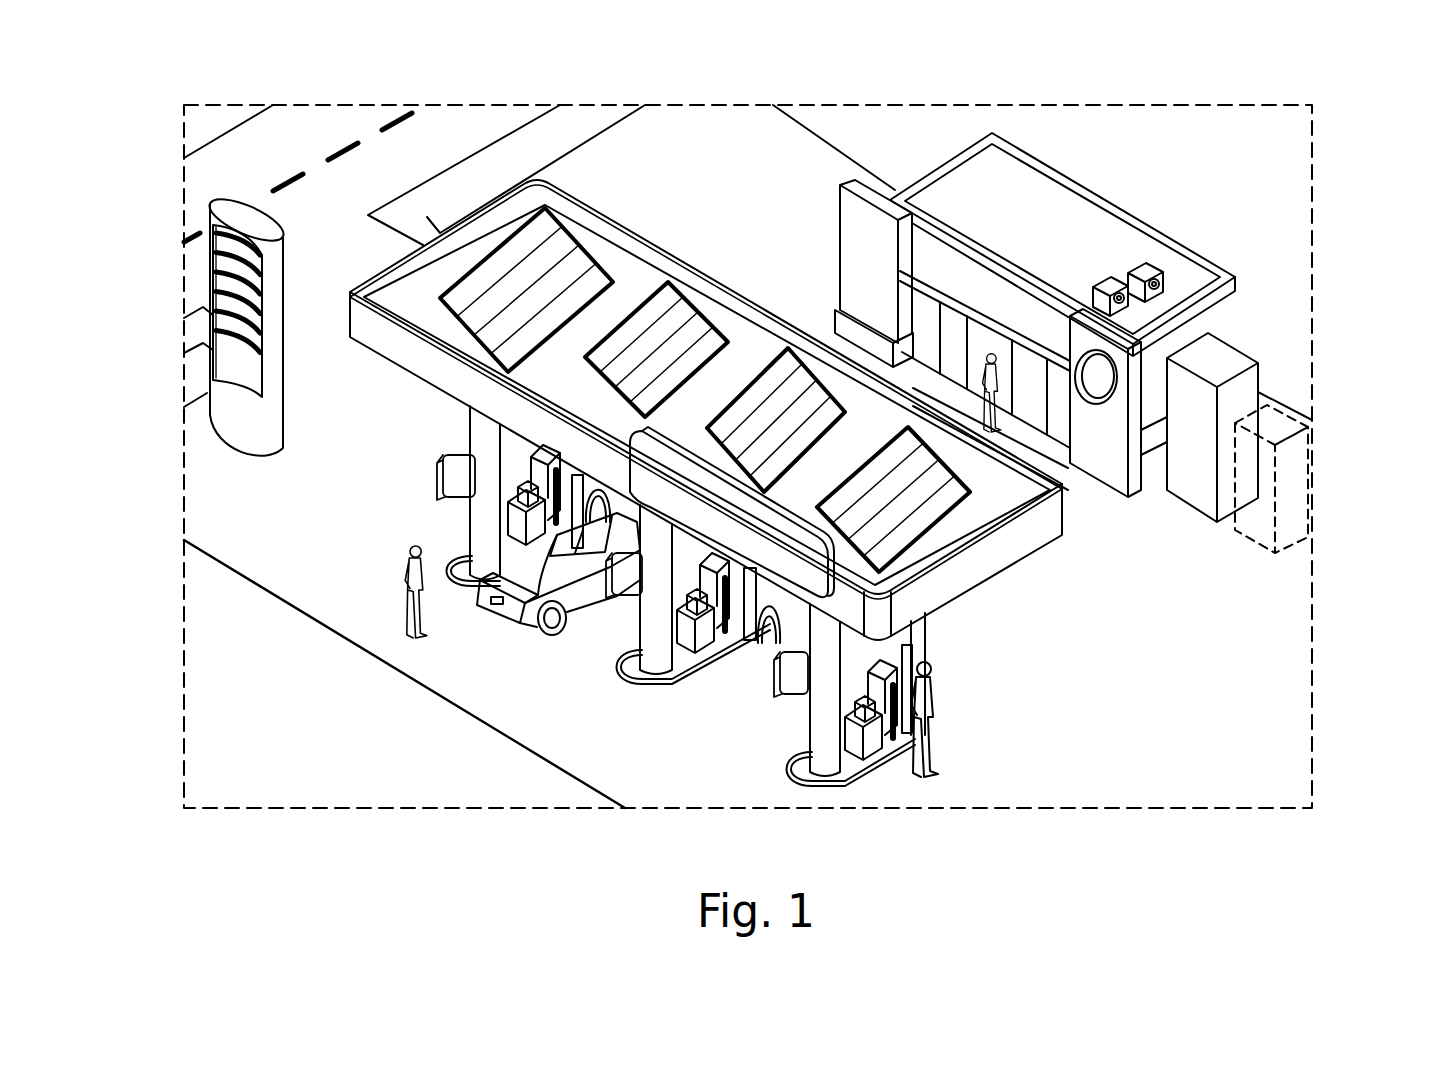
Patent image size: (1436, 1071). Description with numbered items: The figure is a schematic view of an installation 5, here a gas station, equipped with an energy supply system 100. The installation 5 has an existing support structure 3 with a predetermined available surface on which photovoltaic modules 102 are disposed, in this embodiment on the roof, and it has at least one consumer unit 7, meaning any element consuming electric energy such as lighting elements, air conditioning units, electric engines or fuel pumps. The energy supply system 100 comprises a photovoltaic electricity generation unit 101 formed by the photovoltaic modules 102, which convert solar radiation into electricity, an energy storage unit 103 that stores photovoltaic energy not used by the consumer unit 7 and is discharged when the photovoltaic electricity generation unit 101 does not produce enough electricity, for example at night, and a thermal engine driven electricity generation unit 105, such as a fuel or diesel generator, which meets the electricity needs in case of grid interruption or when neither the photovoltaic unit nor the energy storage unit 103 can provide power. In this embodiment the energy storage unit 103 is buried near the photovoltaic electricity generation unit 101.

The existing support structure 3 is at (437, 255).
The installation 5 is at (1266, 118).
The consumer unit 7 is at (215, 333).
The energy supply system 100 is at (553, 212).
The photovoltaic electricity generation unit 101 is at (689, 358).
The photovoltaic module 102 is at (773, 397).
The energy storage unit 103 is at (1300, 488).
The thermal engine driven electricity generation unit 105 is at (1207, 407).